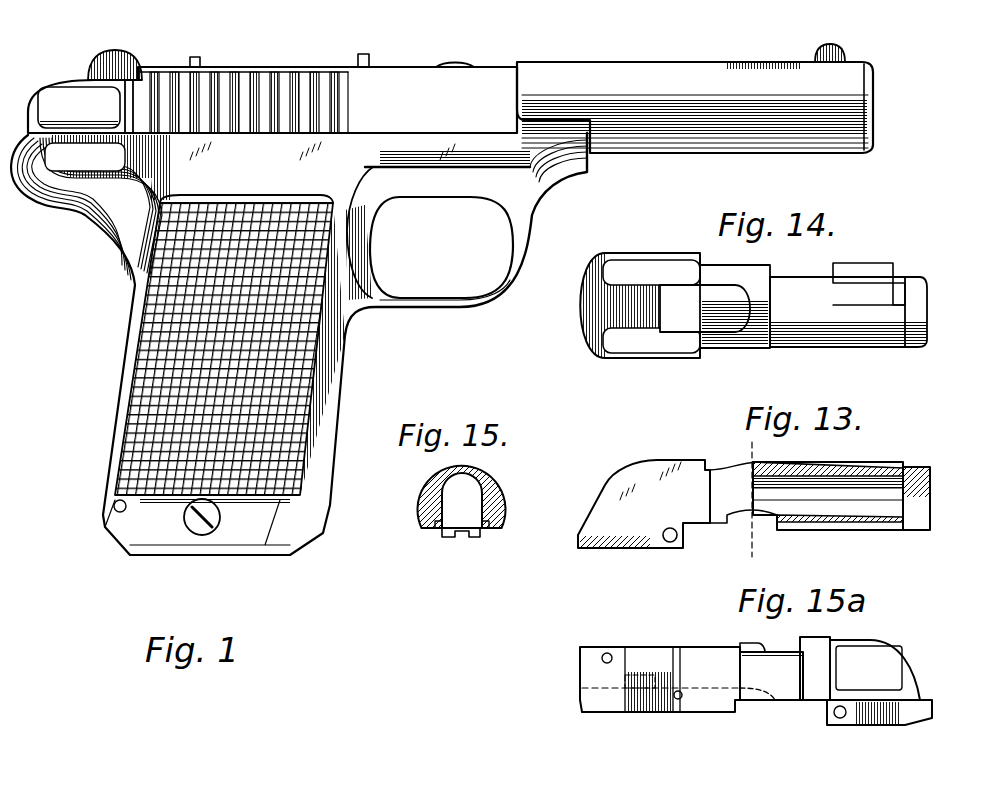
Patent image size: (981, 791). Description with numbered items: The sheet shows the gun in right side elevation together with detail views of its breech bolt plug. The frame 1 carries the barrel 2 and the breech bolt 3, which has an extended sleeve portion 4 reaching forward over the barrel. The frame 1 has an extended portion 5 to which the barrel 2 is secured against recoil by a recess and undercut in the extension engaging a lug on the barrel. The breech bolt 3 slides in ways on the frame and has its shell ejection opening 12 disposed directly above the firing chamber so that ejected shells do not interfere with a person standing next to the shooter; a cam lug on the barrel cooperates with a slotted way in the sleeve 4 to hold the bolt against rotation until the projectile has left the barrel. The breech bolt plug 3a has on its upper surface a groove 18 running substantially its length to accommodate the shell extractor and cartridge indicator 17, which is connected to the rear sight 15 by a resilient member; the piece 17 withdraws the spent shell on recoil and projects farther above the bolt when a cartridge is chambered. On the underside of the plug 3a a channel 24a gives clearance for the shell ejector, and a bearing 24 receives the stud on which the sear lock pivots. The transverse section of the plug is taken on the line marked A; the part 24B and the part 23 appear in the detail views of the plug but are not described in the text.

In FIG. 1, the frame 1 is at (355, 312).
In FIG. 1, the barrel 2 is at (873, 136).
In FIG. 1, the breech bolt 3 is at (262, 70).
In FIG. 14, the breech bolt plug 3a is at (803, 298).
In FIG. 15, the breech bolt plug 3a is at (490, 497).
In FIG. 13, the breech bolt plug 3a is at (825, 468).
In FIG. 15A, the breech bolt plug 3a is at (720, 663).
In FIG. 1, the extended sleeve portion 4 is at (737, 78).
In FIG. 1, the extended portion of the frame 5 is at (518, 213).
In FIG. 1, the shell ejection opening 12 is at (455, 64).
In FIG. 1, the rear sight 15 is at (200, 57).
In FIG. 1, the shell extractor and cartridge indicator 17 is at (367, 54).
In FIG. 14, the groove 18 is at (862, 306).
In FIG. 13, the groove 18 is at (766, 465).
In FIG. 15A, the pin 23 is at (678, 700).
In FIG. 15, the bearing 24 is at (438, 526).
In FIG. 15A, the bearing 24 is at (775, 702).
In FIG. 15, the channel 24a is at (462, 534).
In FIG. 13, the channel 24a is at (838, 527).
In FIG. 13, the recess 24B is at (740, 523).
In FIG. 13, the section line A is at (735, 451).